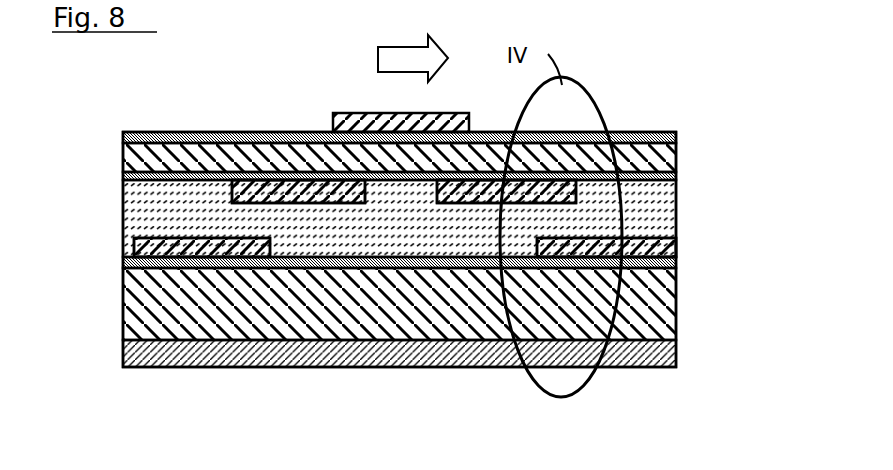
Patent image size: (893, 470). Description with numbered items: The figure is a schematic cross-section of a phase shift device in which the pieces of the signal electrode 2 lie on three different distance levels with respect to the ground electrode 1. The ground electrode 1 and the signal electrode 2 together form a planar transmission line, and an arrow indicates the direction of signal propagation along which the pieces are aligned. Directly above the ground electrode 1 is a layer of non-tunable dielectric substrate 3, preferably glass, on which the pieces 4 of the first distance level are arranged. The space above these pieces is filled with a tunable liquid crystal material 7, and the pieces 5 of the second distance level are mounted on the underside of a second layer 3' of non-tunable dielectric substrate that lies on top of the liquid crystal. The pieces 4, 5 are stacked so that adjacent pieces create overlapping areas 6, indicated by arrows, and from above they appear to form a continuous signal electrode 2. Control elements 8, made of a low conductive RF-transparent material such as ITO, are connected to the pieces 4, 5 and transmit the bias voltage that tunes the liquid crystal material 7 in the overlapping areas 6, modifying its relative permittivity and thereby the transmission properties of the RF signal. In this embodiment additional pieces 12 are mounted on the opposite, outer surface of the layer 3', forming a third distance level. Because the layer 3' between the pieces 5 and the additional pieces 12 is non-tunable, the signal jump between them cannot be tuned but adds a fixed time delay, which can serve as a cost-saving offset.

The ground electrode 1 is at (650, 350).
The signal electrode 2 is at (592, 190).
The non-tunable dielectric substrate 3 is at (443, 300).
The second layer of non-tunable dielectric substrate 3' is at (445, 151).
The pieces of the signal electrode 4 is at (222, 250).
The pieces of the signal electrode 5 is at (473, 194).
The overlapping areas 6 is at (248, 219).
The tunable liquid crystal material 7 is at (172, 217).
The control elements 8 is at (160, 141).
The additional pieces 12 is at (363, 121).